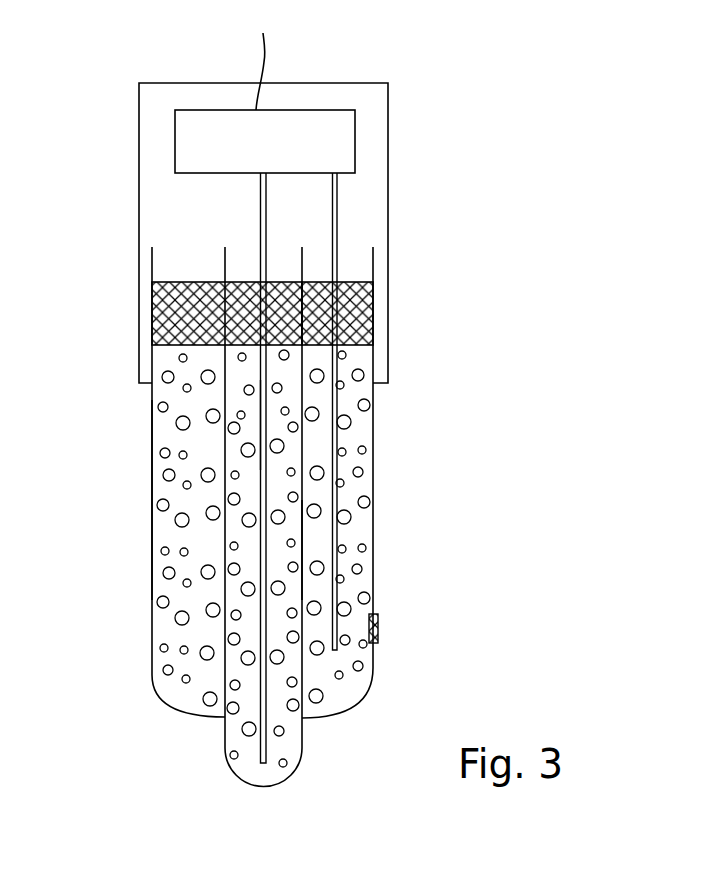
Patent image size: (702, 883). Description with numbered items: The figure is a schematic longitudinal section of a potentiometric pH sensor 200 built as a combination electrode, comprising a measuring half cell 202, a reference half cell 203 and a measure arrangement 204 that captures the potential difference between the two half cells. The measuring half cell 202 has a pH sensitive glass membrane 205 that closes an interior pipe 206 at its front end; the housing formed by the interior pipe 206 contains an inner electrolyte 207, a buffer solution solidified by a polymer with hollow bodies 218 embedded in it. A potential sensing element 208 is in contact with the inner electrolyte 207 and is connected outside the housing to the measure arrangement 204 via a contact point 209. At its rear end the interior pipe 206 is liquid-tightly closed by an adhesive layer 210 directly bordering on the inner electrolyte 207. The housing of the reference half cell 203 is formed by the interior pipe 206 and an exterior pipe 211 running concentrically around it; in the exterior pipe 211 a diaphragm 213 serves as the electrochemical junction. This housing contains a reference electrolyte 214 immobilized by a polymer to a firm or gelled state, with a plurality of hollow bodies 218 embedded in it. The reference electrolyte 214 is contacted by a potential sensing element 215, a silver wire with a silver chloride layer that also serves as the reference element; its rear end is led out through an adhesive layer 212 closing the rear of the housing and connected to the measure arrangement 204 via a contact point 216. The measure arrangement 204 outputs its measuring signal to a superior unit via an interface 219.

The potentiometric pH sensor 200 is at (472, 380).
The measuring half cell 202 is at (316, 768).
The reference half cell 203 is at (398, 455).
The measure arrangement 204 is at (292, 152).
The pH sensitive glass membrane 205 is at (262, 787).
The interior pipe 206 is at (304, 539).
The inner electrolyte 207 is at (292, 670).
The potential sensing element 208 is at (263, 420).
The contact point 209 is at (258, 173).
The adhesive layer 210 is at (290, 280).
The exterior pipe 211 is at (152, 502).
The adhesive layer 212 is at (355, 322).
The diaphragm 213 is at (379, 632).
The reference electrolyte 214 is at (165, 585).
The potential sensing element 215 is at (333, 496).
The contact point 216 is at (339, 174).
The hollow bodies 218 is at (243, 729).
The interface 219 is at (265, 52).